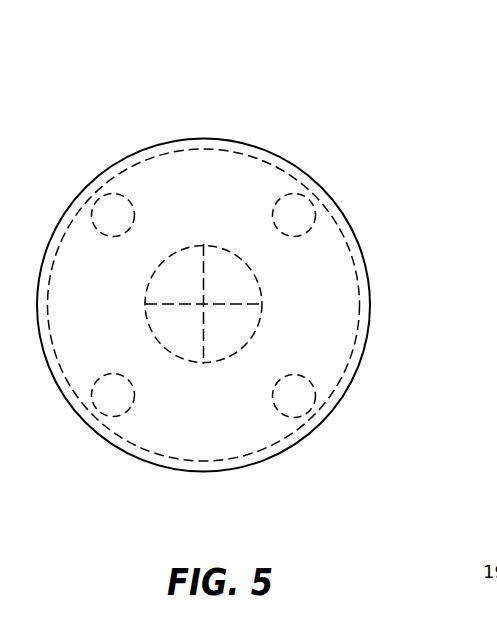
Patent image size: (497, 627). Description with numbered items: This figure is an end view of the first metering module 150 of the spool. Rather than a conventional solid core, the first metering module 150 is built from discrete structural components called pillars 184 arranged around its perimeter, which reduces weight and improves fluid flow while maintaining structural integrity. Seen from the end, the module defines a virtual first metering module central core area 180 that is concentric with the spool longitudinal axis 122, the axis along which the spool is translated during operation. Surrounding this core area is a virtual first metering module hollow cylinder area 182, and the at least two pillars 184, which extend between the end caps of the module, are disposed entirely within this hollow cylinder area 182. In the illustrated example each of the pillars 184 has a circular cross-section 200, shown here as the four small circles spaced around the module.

The first metering module 150 is at (133, 84).
The first metering module central core area 180 is at (223, 263).
The pillars 184 is at (105, 208).
The spool longitudinal axis 122 is at (204, 304).
The circular cross-section 200 is at (313, 383).
The first metering module hollow cylinder area 182 is at (153, 432).